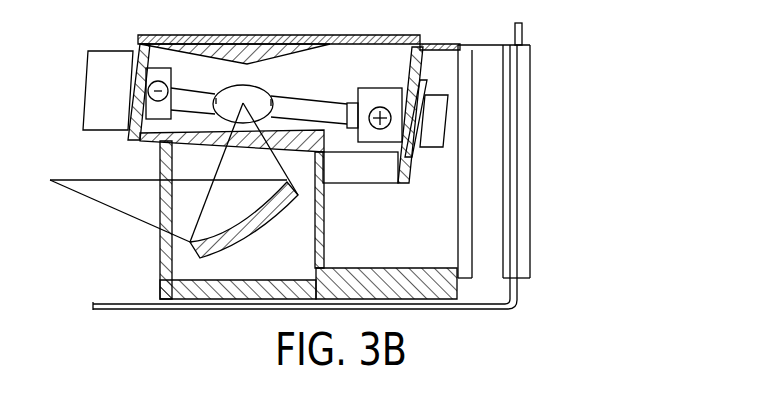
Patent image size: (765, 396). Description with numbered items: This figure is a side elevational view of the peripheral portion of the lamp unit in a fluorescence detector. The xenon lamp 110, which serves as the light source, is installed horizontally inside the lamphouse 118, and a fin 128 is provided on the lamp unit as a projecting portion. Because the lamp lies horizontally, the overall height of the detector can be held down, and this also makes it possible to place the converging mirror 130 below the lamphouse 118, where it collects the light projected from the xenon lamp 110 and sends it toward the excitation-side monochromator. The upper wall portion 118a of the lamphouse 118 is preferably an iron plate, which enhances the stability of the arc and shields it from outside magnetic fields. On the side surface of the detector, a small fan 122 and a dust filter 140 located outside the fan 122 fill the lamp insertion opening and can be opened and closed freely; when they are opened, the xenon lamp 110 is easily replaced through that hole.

The xenon lamp 110 is at (300, 99).
The lamphouse 118 is at (370, 58).
The upper wall portion 118a is at (265, 37).
The fan 122 is at (490, 133).
The fin 128 is at (213, 35).
The converging mirror 130 is at (272, 222).
The dust filter 140 is at (530, 217).